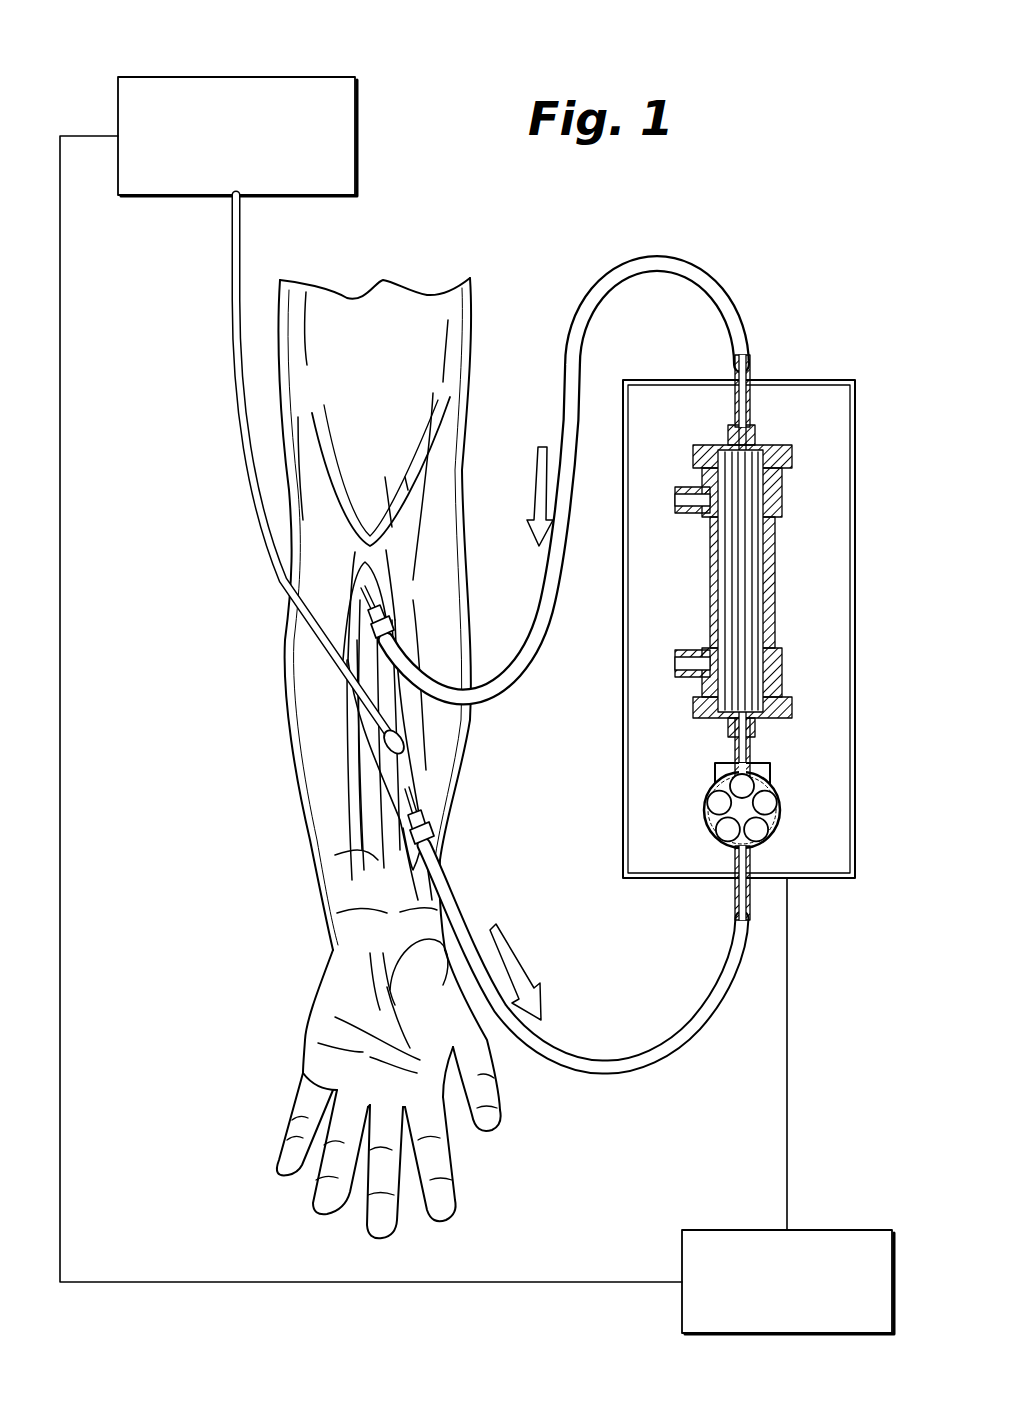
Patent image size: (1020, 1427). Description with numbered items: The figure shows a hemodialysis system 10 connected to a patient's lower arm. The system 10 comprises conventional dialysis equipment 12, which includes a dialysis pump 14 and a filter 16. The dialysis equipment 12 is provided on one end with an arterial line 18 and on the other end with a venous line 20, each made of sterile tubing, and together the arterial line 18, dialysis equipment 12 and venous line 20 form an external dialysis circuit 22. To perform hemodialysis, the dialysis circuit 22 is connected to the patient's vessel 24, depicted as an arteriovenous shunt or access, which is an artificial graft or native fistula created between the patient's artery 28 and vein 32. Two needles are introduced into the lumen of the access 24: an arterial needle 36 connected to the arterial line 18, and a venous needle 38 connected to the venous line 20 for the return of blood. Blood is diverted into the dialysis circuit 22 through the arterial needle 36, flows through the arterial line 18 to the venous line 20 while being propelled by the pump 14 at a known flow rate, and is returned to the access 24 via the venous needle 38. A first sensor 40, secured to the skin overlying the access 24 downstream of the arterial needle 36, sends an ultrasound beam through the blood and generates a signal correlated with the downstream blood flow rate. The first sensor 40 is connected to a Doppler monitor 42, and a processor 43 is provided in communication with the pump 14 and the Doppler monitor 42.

The hemodialysis system 10 is at (212, 872).
The dialysis equipment 12 is at (809, 380).
The dialysis pump 14 is at (770, 833).
The filter 16 is at (775, 582).
The arterial line 18 is at (632, 1068).
The venous line 20 is at (680, 258).
The external dialysis circuit 22 is at (762, 292).
The vessel (arteriovenous shunt or access) 24 is at (403, 760).
The artery 28 is at (413, 718).
The vein 32 is at (367, 853).
The arterial needle 36 is at (405, 805).
The venous needle 38 is at (360, 598).
The first sensor 40 is at (383, 733).
The Doppler monitor 42 is at (247, 77).
The processor 43 is at (820, 1230).